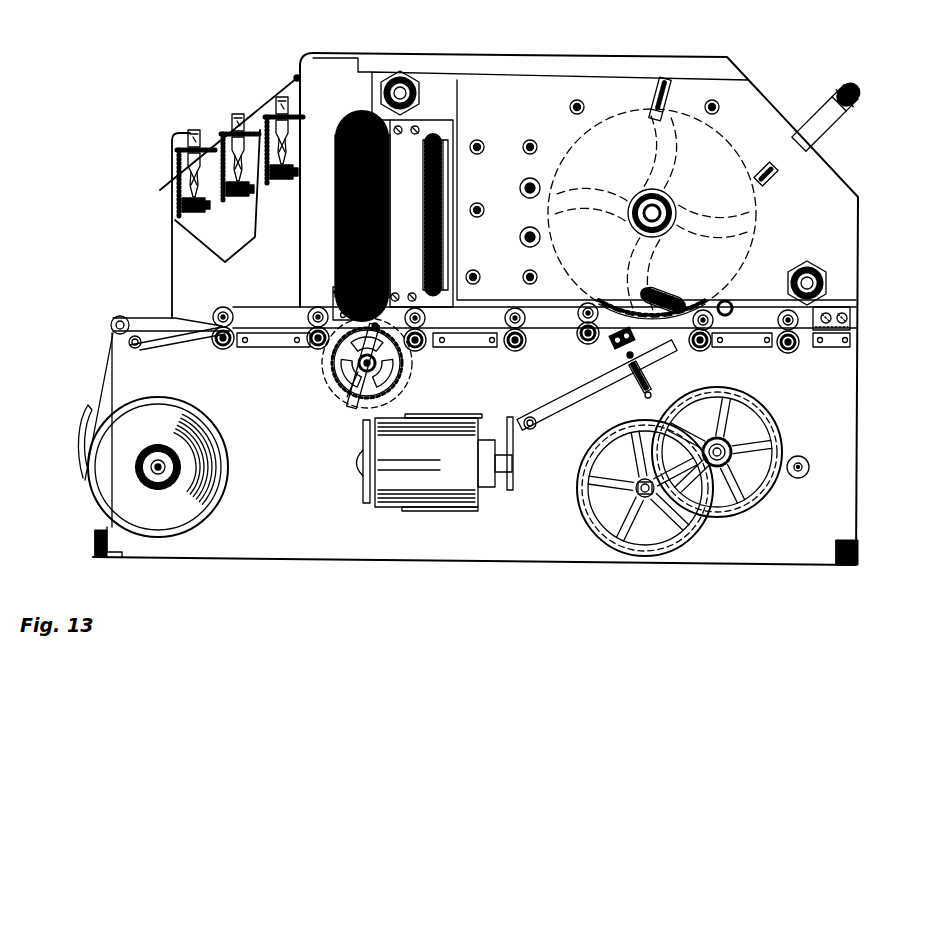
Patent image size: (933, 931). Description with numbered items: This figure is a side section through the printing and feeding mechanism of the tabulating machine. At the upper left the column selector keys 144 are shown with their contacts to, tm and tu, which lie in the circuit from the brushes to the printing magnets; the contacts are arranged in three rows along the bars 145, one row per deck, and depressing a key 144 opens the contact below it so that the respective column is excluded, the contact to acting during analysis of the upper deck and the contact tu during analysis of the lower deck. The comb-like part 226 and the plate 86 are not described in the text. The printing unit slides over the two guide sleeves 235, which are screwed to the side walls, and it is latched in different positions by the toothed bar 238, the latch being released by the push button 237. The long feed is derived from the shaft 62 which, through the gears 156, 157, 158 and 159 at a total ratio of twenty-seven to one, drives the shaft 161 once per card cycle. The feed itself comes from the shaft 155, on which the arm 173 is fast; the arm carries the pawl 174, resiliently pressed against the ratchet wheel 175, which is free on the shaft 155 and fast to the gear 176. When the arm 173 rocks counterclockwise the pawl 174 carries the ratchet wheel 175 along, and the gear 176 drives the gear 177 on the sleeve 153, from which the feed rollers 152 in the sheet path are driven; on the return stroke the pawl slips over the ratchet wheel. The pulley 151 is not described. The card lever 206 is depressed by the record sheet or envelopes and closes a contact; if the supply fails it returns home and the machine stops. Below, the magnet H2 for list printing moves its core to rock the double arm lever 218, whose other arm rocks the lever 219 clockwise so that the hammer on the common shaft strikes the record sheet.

The comb 226 is at (380, 140).
The guide sleeve 235 is at (827, 287).
The slot plate 86 is at (668, 80).
The toothed bar 238 is at (768, 165).
The push button 237 is at (852, 92).
The column selector key 144 is at (190, 130).
The bar 145 is at (226, 263).
The pawl 174 is at (343, 315).
The pulley 151 is at (118, 320).
The card lever 206 is at (157, 340).
The feed roller 152 is at (308, 336).
The sleeve 153 is at (587, 336).
The gear 177 is at (428, 346).
The ratchet wheel 175 is at (373, 403).
The shaft 155 is at (364, 380).
The arm 173 is at (375, 350).
The gear 176 is at (347, 397).
The double arm lever 218 is at (568, 393).
The lever 219 is at (648, 355).
The gear 159 is at (667, 547).
The shaft 161 is at (643, 496).
The gear 157 is at (732, 513).
The gear 158 is at (728, 465).
The gear 156 is at (810, 475).
The shaft 62 is at (802, 467).
The magnet H2 is at (453, 478).
The contact tu is at (190, 172).
The contact tm is at (238, 192).
The contact to is at (275, 115).